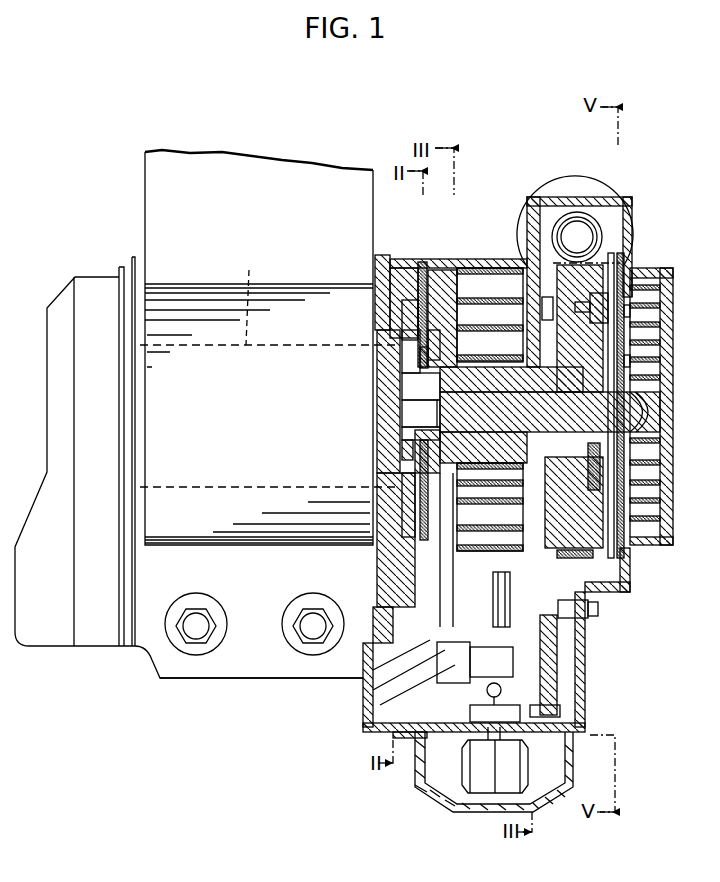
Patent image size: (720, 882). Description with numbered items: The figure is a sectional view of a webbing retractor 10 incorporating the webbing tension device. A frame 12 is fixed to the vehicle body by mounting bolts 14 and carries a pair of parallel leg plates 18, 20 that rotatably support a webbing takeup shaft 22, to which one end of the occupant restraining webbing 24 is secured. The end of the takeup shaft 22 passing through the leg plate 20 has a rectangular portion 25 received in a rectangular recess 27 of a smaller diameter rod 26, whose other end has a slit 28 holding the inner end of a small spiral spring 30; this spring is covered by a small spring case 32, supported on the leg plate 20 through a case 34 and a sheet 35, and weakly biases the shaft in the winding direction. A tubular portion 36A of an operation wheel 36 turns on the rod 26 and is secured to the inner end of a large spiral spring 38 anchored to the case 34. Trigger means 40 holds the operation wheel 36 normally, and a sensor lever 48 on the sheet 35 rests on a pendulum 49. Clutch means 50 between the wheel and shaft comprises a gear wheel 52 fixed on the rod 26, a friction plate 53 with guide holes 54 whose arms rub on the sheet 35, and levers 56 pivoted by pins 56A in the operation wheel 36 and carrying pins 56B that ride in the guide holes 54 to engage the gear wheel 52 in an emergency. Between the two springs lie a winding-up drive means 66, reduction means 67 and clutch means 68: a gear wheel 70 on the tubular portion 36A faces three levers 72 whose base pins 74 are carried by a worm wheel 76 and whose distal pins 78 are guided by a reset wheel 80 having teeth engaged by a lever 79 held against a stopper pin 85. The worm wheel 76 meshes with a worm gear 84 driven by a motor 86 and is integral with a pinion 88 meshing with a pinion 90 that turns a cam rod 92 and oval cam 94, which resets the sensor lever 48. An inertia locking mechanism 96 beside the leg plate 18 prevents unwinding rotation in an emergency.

The webbing retractor 10 is at (98, 170).
The frame 12 is at (236, 676).
The mounting bolts 14 is at (200, 615).
The leg plate 18 is at (121, 620).
The leg plate 20 is at (378, 580).
The webbing takeup shaft 22 is at (248, 296).
The occupant restraining webbing 24 is at (297, 170).
The rectangular portion 25 is at (410, 440).
The smaller diameter rod 26 is at (620, 400).
The rectangular recess 27 is at (413, 418).
The slit 28 is at (640, 410).
The small spiral spring 30 is at (656, 345).
The small spring case 32 is at (667, 462).
The case 34 is at (470, 256).
The sheet 35 is at (403, 275).
The operation wheel 36 is at (455, 282).
The tubular portion 36A is at (445, 388).
The large spiral spring 38 is at (500, 300).
The trigger means 40 is at (363, 648).
The sensor lever 48 is at (486, 656).
The pendulum 49 is at (478, 707).
The clutch means 50 is at (434, 288).
The gear wheel 52 is at (420, 500).
The friction plate 53 is at (421, 300).
The guide holes 54 is at (405, 340).
The levers 56 is at (425, 318).
The pin 56A is at (420, 335).
The pin 56B is at (415, 376).
The winding-up drive means 66 is at (567, 180).
The reduction means 67 is at (610, 235).
The clutch means 68 is at (597, 564).
The gear wheel 70 is at (640, 360).
The levers 72 is at (650, 305).
The pin 74 is at (614, 300).
The worm wheel 76 is at (622, 300).
The pin 78 is at (641, 320).
The lever 79 is at (628, 578).
The reset wheel 80 is at (633, 222).
The worm gear 84 is at (595, 205).
The stopper pin 85 is at (635, 555).
The motor 86 is at (545, 205).
The pinion 88 is at (522, 305).
The pinion 90 is at (558, 670).
The cam rod 92 is at (574, 612).
The oval cam 94 is at (493, 584).
The inertia locking mechanism 96 is at (46, 638).